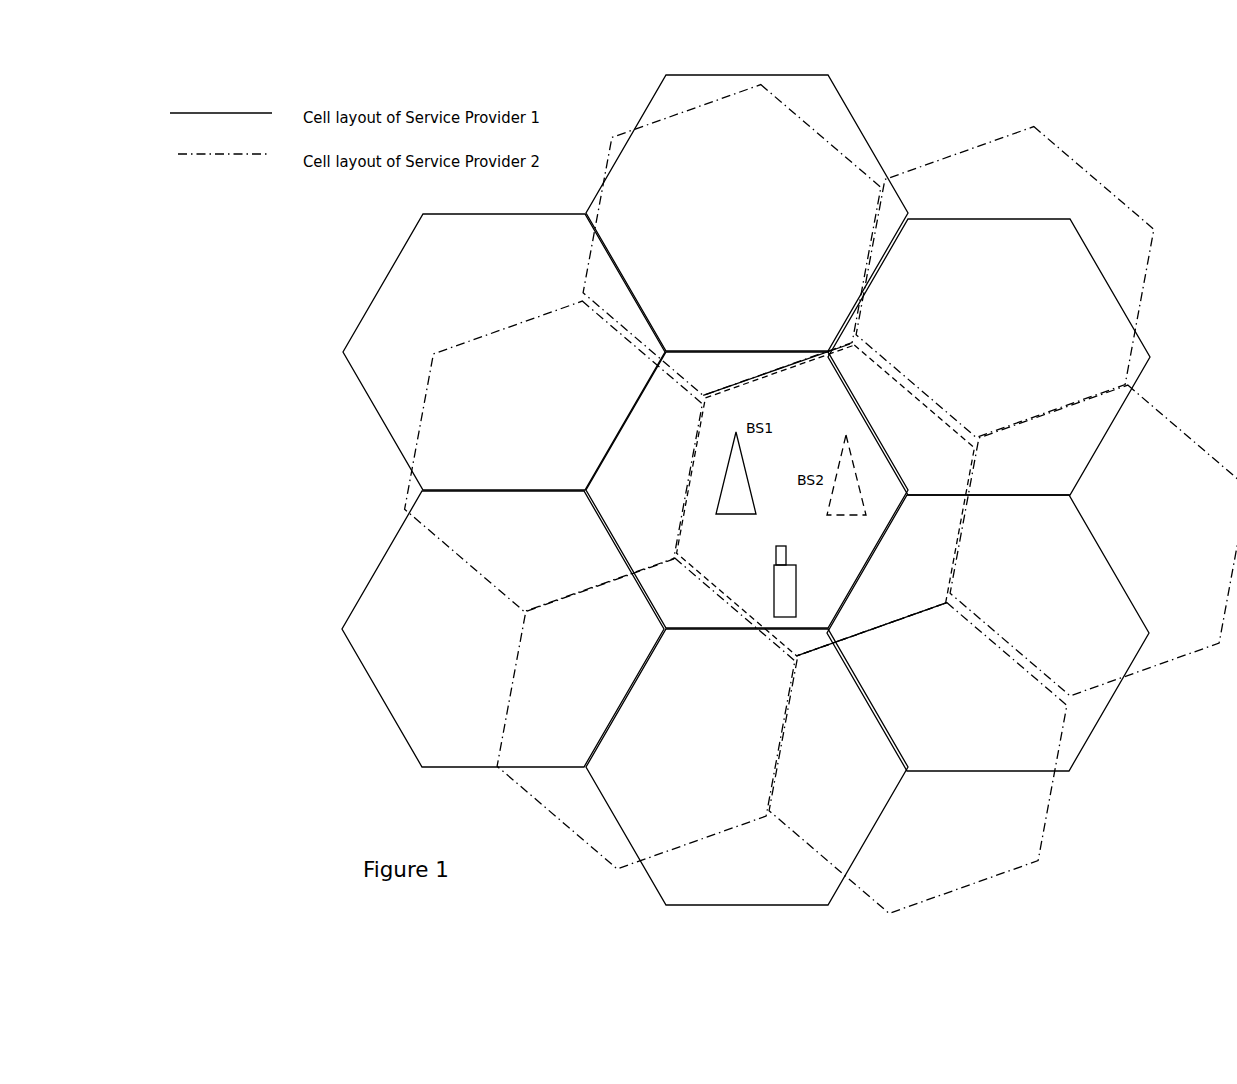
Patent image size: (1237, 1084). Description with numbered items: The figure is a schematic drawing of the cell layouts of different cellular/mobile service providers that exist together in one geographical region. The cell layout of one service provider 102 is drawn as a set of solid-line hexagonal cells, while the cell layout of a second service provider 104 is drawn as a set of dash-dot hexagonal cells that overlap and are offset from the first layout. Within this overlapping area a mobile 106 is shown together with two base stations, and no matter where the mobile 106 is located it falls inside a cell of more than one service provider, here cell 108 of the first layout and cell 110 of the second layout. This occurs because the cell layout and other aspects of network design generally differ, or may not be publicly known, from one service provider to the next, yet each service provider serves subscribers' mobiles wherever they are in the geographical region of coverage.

The cellular/mobile service provider 102 is at (235, 113).
The cellular/mobile service provider 104 is at (242, 154).
The mobile 106 is at (770, 588).
The cell 108 is at (642, 598).
The cell 110 is at (787, 649).